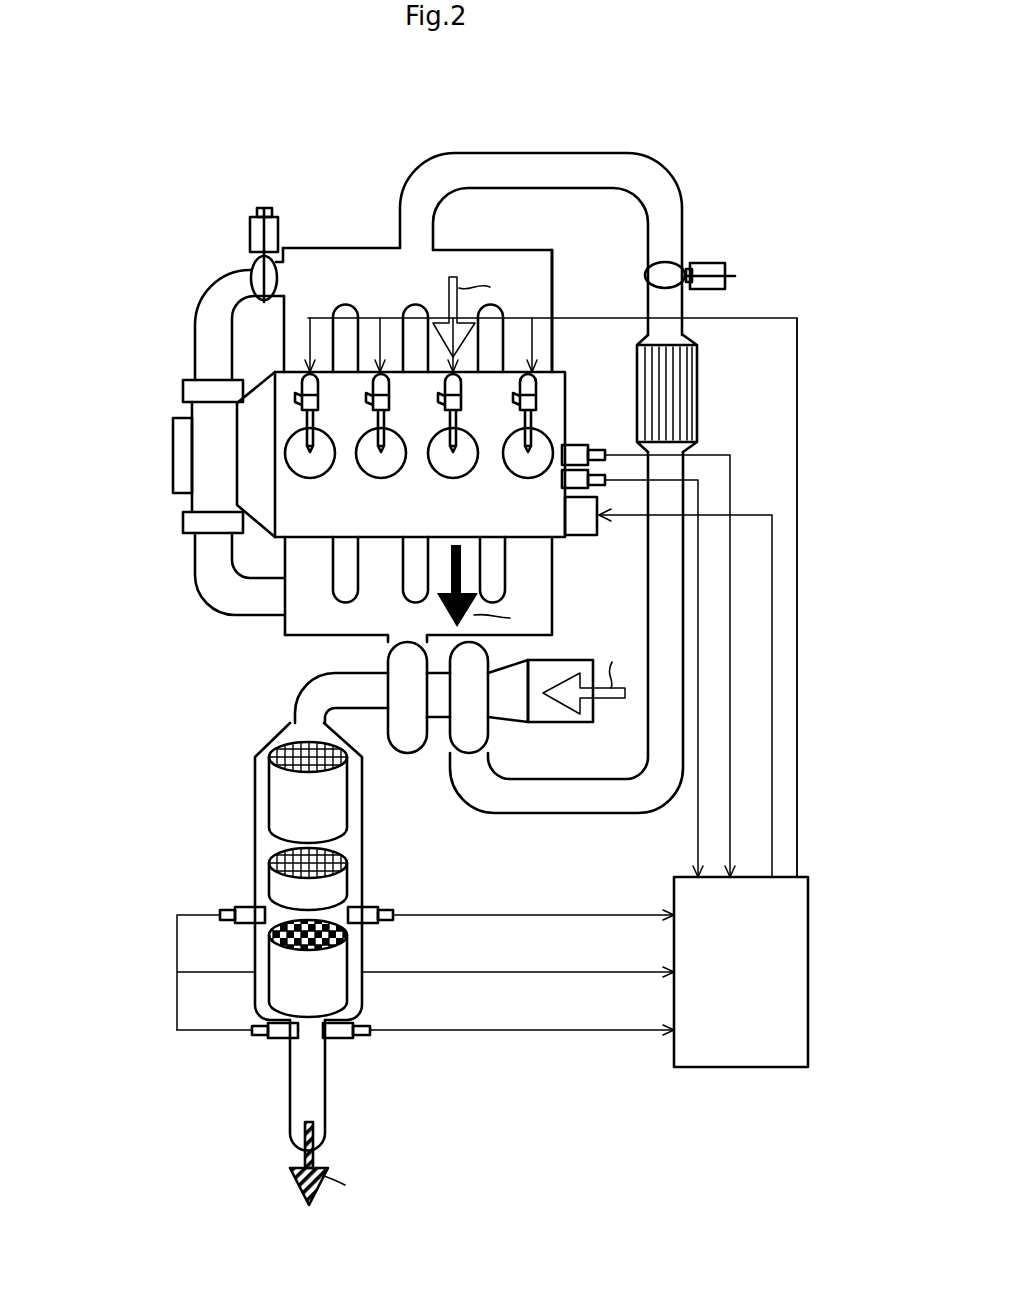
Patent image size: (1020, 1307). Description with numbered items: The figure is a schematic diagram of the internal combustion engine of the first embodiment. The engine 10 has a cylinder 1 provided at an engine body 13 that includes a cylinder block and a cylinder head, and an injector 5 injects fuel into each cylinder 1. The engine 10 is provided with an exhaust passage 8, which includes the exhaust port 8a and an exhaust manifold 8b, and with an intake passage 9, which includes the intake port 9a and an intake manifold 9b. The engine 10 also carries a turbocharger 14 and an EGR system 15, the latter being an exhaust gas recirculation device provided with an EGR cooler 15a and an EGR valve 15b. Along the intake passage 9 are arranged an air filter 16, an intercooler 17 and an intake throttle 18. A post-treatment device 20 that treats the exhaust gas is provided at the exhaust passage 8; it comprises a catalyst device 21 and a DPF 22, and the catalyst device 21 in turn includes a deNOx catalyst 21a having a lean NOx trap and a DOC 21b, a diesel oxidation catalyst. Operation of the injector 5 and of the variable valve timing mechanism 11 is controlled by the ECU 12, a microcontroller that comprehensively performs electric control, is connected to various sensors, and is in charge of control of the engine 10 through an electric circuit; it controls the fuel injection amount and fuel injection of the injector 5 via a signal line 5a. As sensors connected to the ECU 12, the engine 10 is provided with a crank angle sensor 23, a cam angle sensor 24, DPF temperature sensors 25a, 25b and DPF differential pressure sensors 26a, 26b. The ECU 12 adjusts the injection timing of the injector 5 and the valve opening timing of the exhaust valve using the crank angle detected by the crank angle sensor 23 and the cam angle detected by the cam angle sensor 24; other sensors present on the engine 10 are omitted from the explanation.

The cylinder 1 is at (463, 457).
The injector 5 is at (375, 461).
The signal line 5a is at (797, 445).
The exhaust passage 8 is at (216, 738).
The exhaust port 8a is at (298, 636).
The exhaust manifold 8b is at (292, 707).
The intake passage 9 is at (583, 153).
The intake port 9a is at (553, 290).
The intake manifold 9b is at (670, 490).
The engine 10 is at (136, 245).
The variable valve timing mechanism 11 is at (585, 536).
The ECU 12 is at (809, 900).
The engine body 13 is at (618, 352).
The turbocharger 14 is at (415, 745).
The EGR system 15 is at (192, 331).
The EGR cooler 15a is at (173, 456).
The EGR valve 15b is at (250, 236).
The air filter 16 is at (566, 722).
The intercooler 17 is at (698, 385).
The intake throttle 18 is at (727, 272).
The post-treatment device 20 is at (203, 847).
The catalyst device 21 is at (245, 822).
The deNOx catalyst 21a is at (269, 795).
The DOC 21b is at (269, 890).
The DPF 22 is at (270, 992).
The crank angle sensor 23 is at (575, 446).
The cam angle sensor 24 is at (602, 517).
The DPF temperature sensor 25a is at (365, 907).
The DPF temperature sensor 25b is at (342, 1040).
The DPF differential pressure sensor 26a is at (246, 924).
The DPF differential pressure sensor 26b is at (265, 1040).